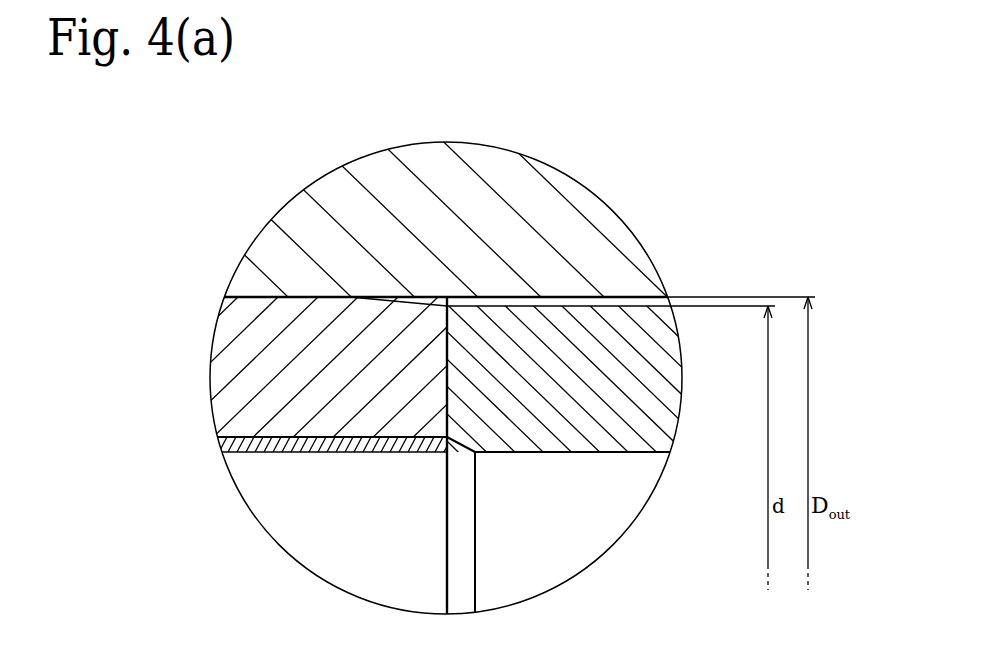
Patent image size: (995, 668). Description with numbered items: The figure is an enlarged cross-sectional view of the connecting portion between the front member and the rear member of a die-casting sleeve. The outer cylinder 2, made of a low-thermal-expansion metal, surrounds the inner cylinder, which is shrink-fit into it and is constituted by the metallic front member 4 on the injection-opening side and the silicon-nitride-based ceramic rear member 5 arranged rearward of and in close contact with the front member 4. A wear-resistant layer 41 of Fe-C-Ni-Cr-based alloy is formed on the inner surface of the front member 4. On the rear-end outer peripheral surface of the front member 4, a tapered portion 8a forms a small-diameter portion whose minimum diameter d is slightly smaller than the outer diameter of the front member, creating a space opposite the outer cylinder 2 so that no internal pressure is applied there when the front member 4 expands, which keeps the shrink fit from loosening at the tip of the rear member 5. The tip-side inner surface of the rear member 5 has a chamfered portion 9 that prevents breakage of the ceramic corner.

The outer cylinder 2 is at (490, 215).
The tapered portion 8a is at (435, 301).
The front member 4 is at (273, 360).
The wear-resistant layer 41 is at (332, 444).
The rear member 5 is at (620, 380).
The chamfered portion 9 is at (457, 450).